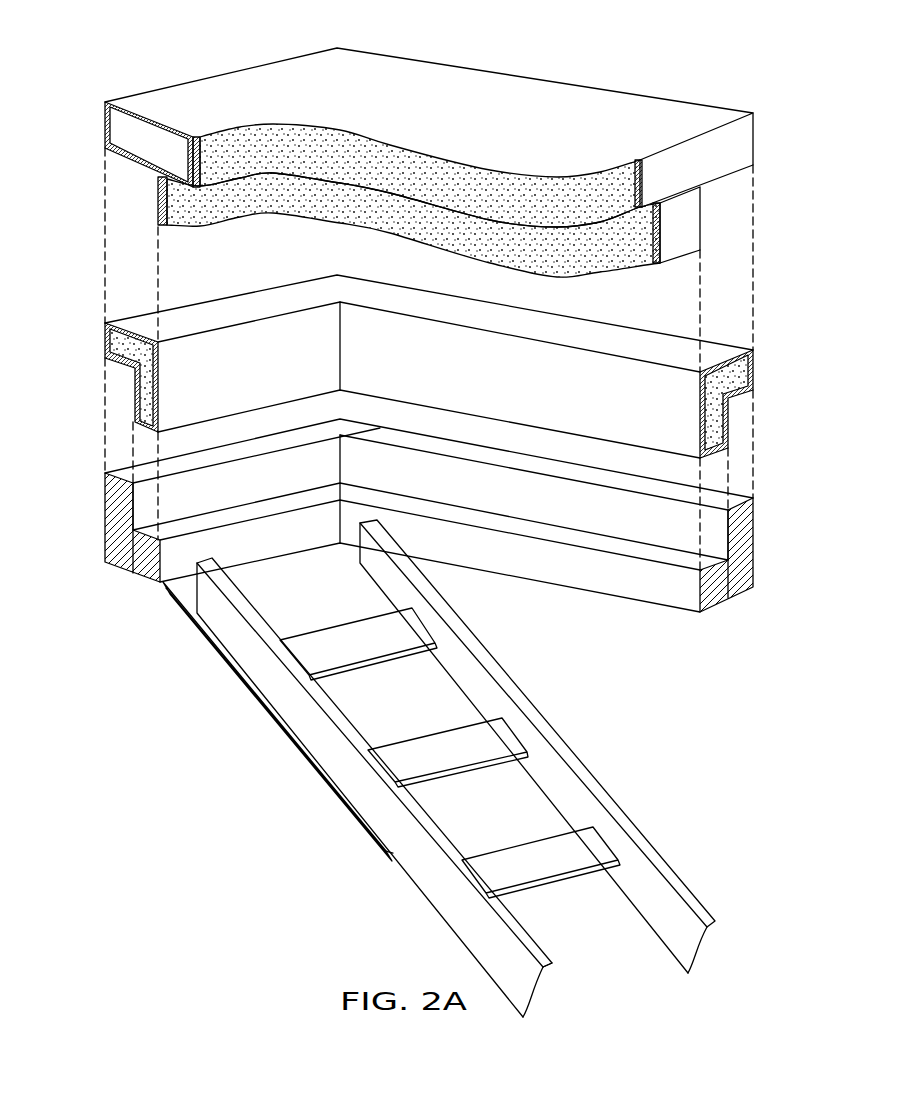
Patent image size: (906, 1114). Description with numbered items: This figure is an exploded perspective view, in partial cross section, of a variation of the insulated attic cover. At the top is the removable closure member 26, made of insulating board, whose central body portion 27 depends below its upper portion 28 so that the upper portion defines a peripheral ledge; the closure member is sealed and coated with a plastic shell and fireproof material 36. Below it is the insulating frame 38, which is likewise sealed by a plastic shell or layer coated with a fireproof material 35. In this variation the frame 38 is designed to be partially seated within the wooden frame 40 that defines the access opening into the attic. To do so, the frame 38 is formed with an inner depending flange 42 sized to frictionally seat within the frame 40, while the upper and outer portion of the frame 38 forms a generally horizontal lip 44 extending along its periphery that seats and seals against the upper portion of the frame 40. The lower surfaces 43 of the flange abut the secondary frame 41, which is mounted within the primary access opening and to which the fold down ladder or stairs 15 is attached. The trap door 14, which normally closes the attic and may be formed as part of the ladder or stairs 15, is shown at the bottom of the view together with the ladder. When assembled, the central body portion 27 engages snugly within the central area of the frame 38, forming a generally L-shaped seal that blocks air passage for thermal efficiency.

The trap door 14 is at (350, 841).
The fold down ladder or stairs 15 is at (303, 731).
The removable closure member 26 is at (498, 94).
The central body portion 27 is at (686, 243).
The upper portion 28 is at (666, 108).
The plastic shell or layer coated with fireproof material 35 is at (107, 345).
The plastic shell and fireproof material 36 is at (104, 127).
The frame 38 is at (402, 348).
The frame defining the access opening 40 is at (147, 492).
The secondary frame 41 is at (167, 568).
The inner depending flange 42 is at (138, 398).
The lower surfaces 43 is at (266, 408).
The generally horizontal lip 44 is at (116, 368).